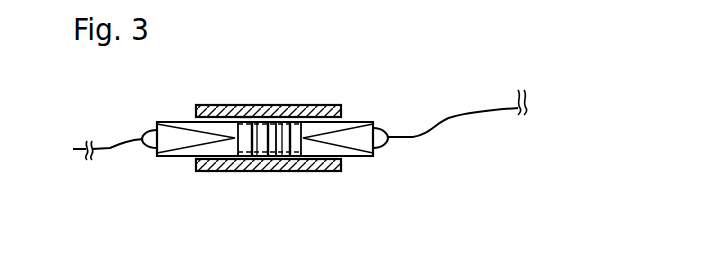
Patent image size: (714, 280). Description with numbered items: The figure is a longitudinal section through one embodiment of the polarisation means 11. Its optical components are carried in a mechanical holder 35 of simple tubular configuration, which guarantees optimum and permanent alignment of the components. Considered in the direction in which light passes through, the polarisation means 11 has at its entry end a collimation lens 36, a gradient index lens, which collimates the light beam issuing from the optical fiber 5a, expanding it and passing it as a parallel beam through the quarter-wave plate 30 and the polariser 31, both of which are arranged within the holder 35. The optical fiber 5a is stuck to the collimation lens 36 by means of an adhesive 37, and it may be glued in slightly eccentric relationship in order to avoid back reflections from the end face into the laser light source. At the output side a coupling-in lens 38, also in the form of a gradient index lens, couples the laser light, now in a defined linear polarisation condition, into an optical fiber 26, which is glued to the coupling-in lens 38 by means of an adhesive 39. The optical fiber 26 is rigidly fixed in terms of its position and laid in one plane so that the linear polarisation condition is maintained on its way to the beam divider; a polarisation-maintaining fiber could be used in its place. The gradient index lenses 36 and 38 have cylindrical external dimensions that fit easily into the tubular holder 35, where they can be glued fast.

The polarisation means 11 is at (320, 99).
The optical fiber 5a is at (103, 148).
The optical fiber 26 is at (453, 113).
The quarter-wave plate 30 is at (255, 142).
The polariser 31 is at (280, 140).
The mechanical holder 35 is at (246, 106).
The collimation lens 36 is at (172, 156).
The adhesive 37 is at (147, 150).
The coupling-in lens 38 is at (365, 150).
The adhesive 39 is at (380, 128).